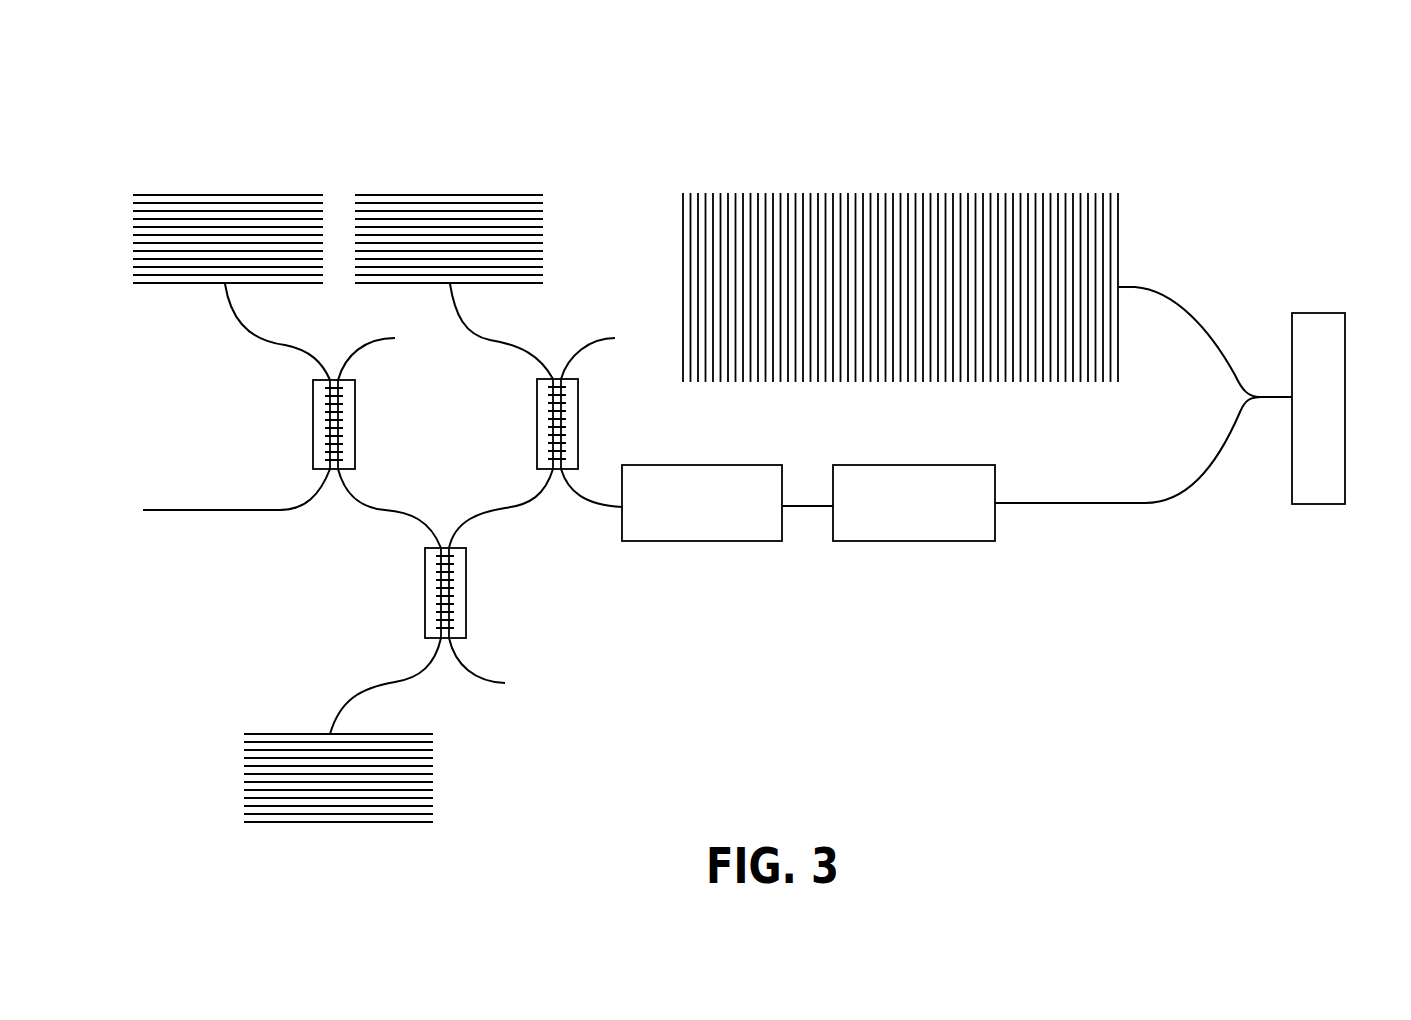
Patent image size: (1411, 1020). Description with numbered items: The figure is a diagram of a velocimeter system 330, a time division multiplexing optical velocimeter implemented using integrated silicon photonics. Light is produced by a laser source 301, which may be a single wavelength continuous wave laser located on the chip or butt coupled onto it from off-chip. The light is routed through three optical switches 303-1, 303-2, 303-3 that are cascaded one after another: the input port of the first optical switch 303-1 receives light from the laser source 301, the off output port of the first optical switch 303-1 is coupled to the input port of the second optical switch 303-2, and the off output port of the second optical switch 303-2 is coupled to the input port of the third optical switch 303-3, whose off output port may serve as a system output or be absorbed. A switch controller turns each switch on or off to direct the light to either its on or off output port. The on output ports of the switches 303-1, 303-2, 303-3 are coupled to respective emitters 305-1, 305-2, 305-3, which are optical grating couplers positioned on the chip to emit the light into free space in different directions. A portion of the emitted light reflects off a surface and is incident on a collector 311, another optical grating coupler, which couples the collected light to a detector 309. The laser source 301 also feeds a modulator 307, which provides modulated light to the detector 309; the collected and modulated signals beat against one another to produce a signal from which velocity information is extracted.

The velocimeter system 330 is at (295, 84).
The laser source 301 is at (728, 465).
The modulator 307 is at (940, 465).
The detector 309 is at (1345, 407).
The collector 311 is at (683, 285).
The first optical switch 303-1 is at (578, 428).
The second optical switch 303-2 is at (466, 598).
The third optical switch 303-3 is at (355, 428).
The first emitter 305-1 is at (463, 194).
The second emitter 305-2 is at (316, 733).
The third emitter 305-3 is at (232, 194).